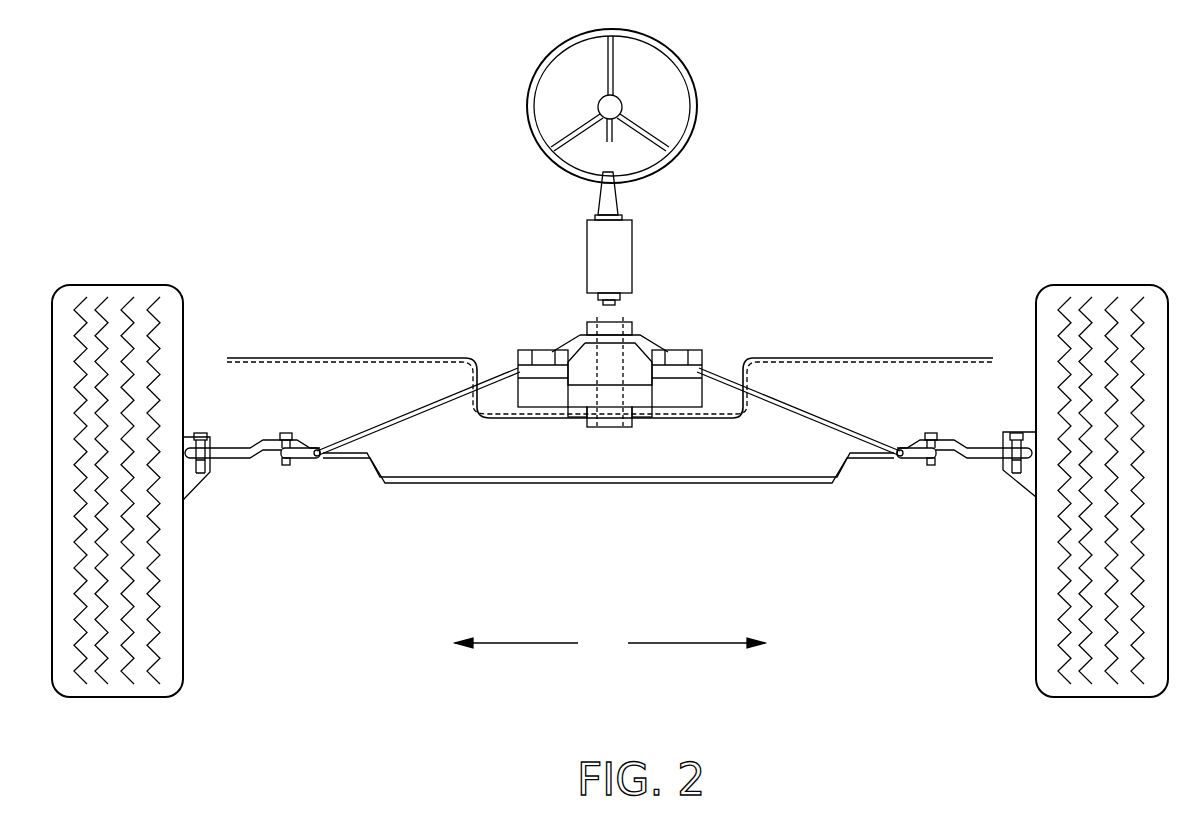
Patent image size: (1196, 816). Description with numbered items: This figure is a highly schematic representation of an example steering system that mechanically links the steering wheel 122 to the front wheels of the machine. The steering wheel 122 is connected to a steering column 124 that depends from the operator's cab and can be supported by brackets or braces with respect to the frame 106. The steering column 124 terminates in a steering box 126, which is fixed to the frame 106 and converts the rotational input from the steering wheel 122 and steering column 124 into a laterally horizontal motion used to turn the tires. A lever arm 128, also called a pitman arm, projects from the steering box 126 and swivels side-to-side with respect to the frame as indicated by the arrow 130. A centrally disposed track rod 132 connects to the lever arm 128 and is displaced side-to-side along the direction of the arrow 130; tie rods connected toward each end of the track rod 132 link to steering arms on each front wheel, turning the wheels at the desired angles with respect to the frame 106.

The frame 106 is at (485, 418).
The steering wheel 122 is at (532, 98).
The steering column 124 is at (617, 197).
The steering box 126 is at (623, 257).
The lever arm 128 is at (648, 343).
The arrow 130 is at (610, 644).
The track rod 132 is at (637, 483).